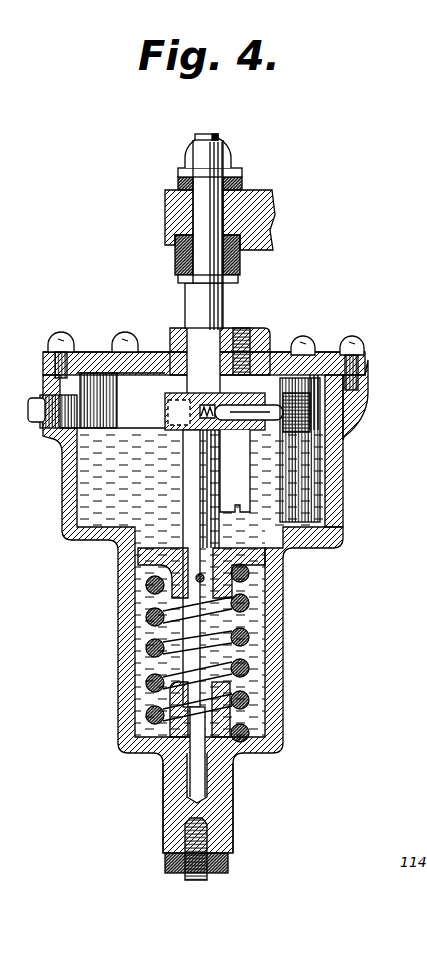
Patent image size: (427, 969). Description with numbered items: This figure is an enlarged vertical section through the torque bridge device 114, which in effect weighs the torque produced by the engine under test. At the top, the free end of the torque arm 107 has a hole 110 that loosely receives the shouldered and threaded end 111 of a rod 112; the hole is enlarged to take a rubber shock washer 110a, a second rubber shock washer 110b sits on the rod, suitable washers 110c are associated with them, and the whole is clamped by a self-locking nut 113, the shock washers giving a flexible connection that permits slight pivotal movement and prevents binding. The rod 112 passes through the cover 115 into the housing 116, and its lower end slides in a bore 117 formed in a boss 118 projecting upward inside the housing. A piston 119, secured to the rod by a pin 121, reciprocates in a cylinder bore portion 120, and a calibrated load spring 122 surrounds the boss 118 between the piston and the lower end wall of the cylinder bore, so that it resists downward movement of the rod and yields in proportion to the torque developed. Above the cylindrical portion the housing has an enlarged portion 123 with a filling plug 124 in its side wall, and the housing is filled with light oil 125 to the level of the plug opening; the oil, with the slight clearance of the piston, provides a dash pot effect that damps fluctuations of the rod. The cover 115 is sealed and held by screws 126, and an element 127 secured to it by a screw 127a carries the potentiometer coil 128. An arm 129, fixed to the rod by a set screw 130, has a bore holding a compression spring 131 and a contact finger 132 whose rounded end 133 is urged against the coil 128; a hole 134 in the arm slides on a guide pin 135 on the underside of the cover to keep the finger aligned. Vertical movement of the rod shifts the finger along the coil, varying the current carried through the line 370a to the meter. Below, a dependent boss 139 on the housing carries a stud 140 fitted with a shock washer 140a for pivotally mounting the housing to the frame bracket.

The torque arm 107 is at (276, 222).
The hole 110 is at (185, 216).
The rubber shock washer 110a is at (180, 262).
The second rubber shock washer 110b is at (246, 181).
The washers 110c is at (180, 172).
The shouldered and threaded end 111 is at (200, 137).
The rod 112 is at (222, 300).
The self-locking nut 113 is at (230, 163).
The torque bridge device 114 is at (320, 352).
The cover 115 is at (368, 366).
The housing 116 is at (346, 542).
The bore 117 is at (205, 787).
The boss 118 is at (225, 722).
The piston 119 is at (140, 565).
The cylinder bore portion 120 is at (268, 614).
The pin 121 is at (205, 579).
The calibrated load spring 122 is at (248, 640).
The enlarged portion 123 is at (327, 470).
The filling plug 124 is at (38, 430).
The light oil 125 is at (142, 430).
The screws 126 is at (58, 340).
The element 127 is at (347, 405).
The screw 127a is at (305, 342).
The potentiometer coil 128 is at (303, 508).
The arm 129 is at (162, 352).
The set screw 130 is at (160, 395).
The compression spring 131 is at (212, 388).
The contact finger 132 is at (236, 331).
The rounded outer end 133 is at (283, 412).
The hole 134 is at (210, 440).
The guide pin 135 is at (230, 493).
The dependent boss 139 is at (230, 845).
The stud 140 is at (190, 840).
The shock washer 140a is at (170, 864).
The line 370a is at (260, 352).